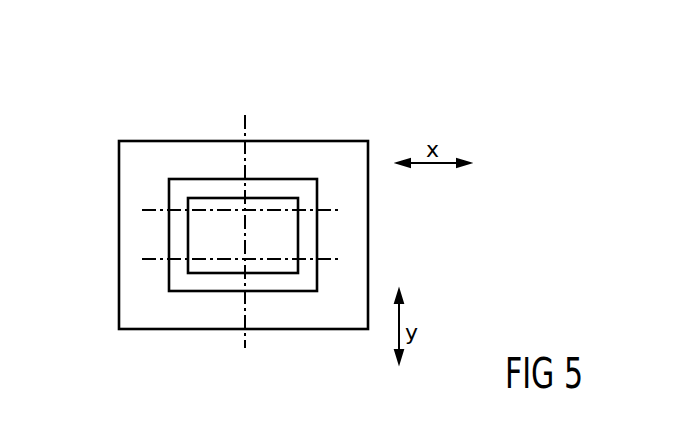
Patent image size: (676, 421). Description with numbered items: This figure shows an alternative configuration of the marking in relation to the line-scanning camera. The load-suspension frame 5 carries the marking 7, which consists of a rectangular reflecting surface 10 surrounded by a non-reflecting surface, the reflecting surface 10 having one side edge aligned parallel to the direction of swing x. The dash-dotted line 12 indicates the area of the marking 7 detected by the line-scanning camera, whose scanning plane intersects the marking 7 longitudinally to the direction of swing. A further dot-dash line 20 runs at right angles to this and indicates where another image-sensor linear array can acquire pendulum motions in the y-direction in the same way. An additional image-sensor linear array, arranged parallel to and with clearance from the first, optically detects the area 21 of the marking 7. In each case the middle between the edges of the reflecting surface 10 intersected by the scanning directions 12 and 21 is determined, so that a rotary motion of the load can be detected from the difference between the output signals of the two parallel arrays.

The load-suspension frame 5 is at (141, 298).
The marking 7 is at (168, 196).
The reflecting surface 10 is at (203, 239).
The dash-dotted line 12 is at (335, 261).
The dot-dash line 20 is at (247, 341).
The area detected by additional image-sensor linear array 21 is at (335, 212).